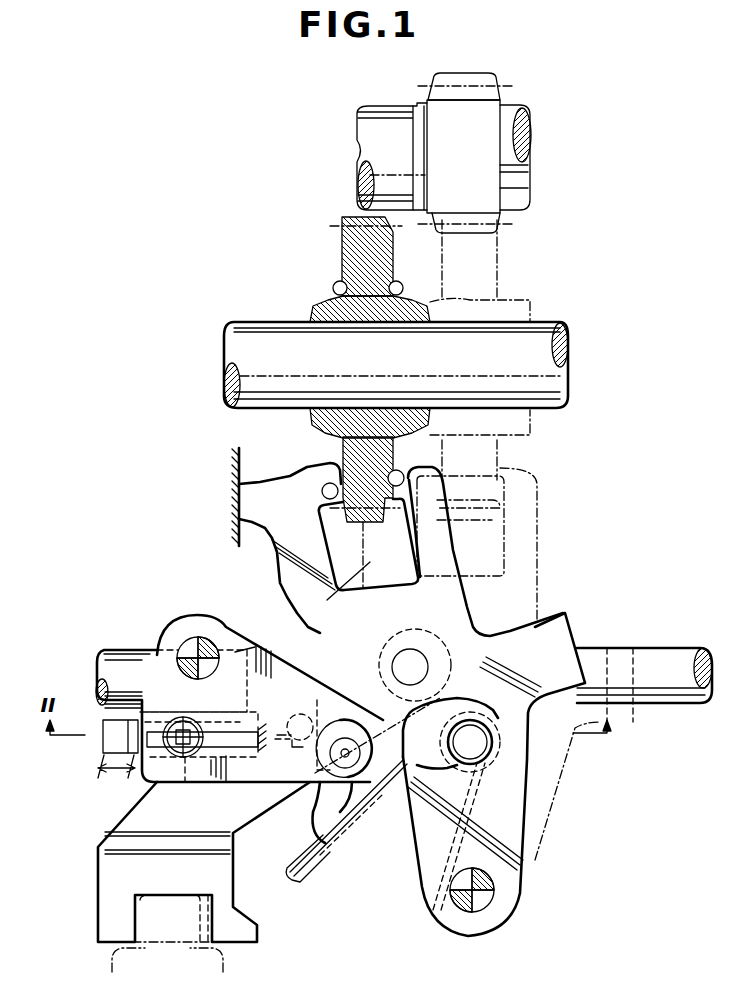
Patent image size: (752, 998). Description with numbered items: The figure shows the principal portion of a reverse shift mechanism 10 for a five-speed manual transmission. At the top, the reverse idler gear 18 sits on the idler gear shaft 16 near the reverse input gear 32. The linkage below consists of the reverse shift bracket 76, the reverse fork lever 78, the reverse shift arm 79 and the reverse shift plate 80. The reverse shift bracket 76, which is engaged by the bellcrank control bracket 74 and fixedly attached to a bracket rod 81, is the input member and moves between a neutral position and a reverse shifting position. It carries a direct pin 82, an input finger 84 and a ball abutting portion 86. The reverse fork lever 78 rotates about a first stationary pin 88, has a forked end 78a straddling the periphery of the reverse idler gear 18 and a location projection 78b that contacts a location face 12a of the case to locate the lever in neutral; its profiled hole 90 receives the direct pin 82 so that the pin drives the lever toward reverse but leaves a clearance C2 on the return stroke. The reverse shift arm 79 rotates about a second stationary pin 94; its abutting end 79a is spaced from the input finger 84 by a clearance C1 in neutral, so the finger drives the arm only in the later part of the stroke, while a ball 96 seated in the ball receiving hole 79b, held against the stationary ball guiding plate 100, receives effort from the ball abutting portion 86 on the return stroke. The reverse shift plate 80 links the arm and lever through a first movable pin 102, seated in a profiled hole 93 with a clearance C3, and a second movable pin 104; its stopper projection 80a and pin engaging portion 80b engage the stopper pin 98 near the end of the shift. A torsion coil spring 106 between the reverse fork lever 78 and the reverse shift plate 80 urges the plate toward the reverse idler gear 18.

The reverse shift mechanism 10 is at (163, 539).
The location face 12a is at (240, 450).
The idler gear shaft 16 is at (548, 322).
The reverse idler gear 18 is at (497, 280).
The reverse input gear 32 is at (500, 83).
The bellcrank control bracket 74 is at (225, 967).
The reverse shift bracket 76 is at (96, 875).
The reverse fork lever 78 is at (409, 538).
The forked end 78a is at (433, 547).
The location projection 78b is at (257, 497).
The reverse shift arm 79 is at (224, 686).
The abutting end 79a is at (128, 700).
The ball receiving hole 79b is at (188, 733).
The reverse shift plate 80 is at (376, 794).
The stopper projection 80a is at (313, 838).
The pin engaging portion 80b is at (318, 812).
The bracket rod 81 is at (655, 657).
The direct pin 82 is at (485, 757).
The input finger 84 is at (108, 722).
The ball abutting portion 86 is at (160, 768).
The first stationary pin 88 is at (480, 912).
The profiled hole 90 is at (501, 793).
The profiled hole 93 is at (306, 714).
The second stationary pin 94 is at (187, 640).
The ball 96 is at (185, 760).
The stopper pin 98 is at (292, 700).
The stationary ball guiding plate 100 is at (242, 752).
The first movable pin 102 is at (351, 795).
The second movable pin 104 is at (412, 648).
The torsion coil spring 106 is at (318, 850).
The clearance C1 is at (100, 768).
The clearance C2 is at (551, 720).
The clearance C3 is at (354, 720).